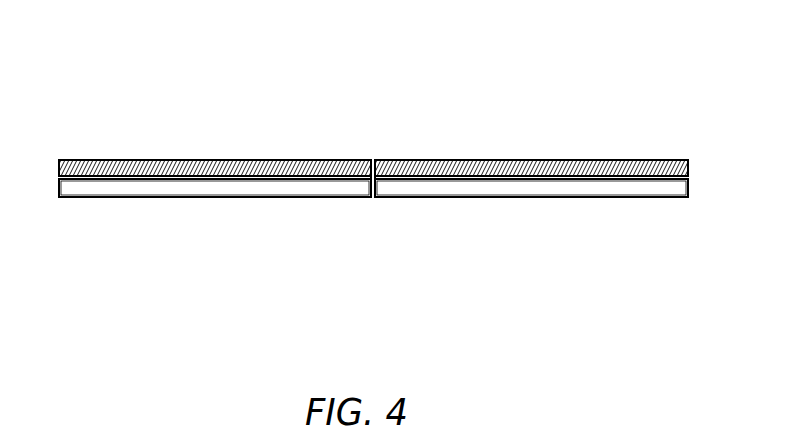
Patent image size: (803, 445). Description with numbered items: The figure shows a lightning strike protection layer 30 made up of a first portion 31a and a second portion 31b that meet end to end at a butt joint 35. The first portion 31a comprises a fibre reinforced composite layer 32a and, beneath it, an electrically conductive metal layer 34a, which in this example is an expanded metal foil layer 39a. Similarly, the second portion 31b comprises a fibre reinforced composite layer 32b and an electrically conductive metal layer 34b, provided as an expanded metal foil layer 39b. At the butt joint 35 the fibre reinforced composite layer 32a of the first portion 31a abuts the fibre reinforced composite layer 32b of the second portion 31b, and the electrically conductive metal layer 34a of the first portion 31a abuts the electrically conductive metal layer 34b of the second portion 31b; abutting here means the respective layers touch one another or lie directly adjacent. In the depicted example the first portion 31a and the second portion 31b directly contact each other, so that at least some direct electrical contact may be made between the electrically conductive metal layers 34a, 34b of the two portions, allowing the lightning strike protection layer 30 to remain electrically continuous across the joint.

The lightning strike protection layer 30 is at (115, 87).
The first portion 31a is at (238, 123).
The second portion 31b is at (480, 127).
The fibre reinforced composite layer 32a is at (178, 168).
The fibre reinforced composite layer 32b is at (557, 167).
The electrically conductive metal layer 34a is at (173, 193).
The electrically conductive metal layer 34b is at (573, 190).
The butt joint 35 is at (373, 147).
The expanded metal foil layer 39a is at (268, 190).
The expanded metal foil layer 39b is at (480, 189).